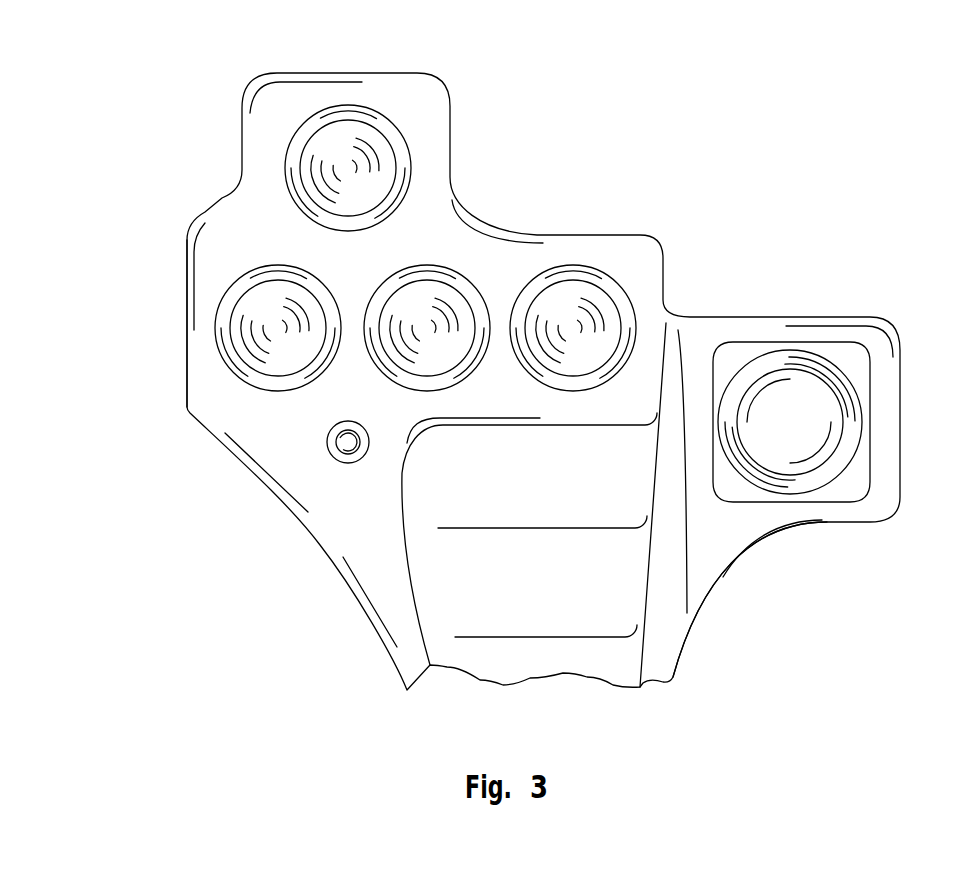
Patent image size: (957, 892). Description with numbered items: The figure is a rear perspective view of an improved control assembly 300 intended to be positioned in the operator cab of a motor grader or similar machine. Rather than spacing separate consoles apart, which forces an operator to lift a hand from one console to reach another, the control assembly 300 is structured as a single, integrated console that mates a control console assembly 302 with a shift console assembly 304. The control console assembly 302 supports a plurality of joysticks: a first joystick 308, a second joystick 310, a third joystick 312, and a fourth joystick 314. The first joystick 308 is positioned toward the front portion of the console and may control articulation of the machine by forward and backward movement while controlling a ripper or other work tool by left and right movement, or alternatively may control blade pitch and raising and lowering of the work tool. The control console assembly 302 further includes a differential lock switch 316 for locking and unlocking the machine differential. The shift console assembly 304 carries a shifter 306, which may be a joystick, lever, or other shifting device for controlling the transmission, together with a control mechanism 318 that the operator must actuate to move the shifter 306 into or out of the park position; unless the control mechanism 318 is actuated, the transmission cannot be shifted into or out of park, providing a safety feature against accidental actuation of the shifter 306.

The control assembly 300 is at (666, 125).
The control console assembly 302 is at (313, 406).
The shift console assembly 304 is at (875, 335).
The shifter 306 is at (794, 407).
The first joystick 308 is at (333, 141).
The second joystick 310 is at (264, 300).
The third joystick 312 is at (418, 297).
The fourth joystick 314 is at (565, 300).
The differential lock switch 316 is at (342, 448).
The control mechanism 318 is at (835, 467).